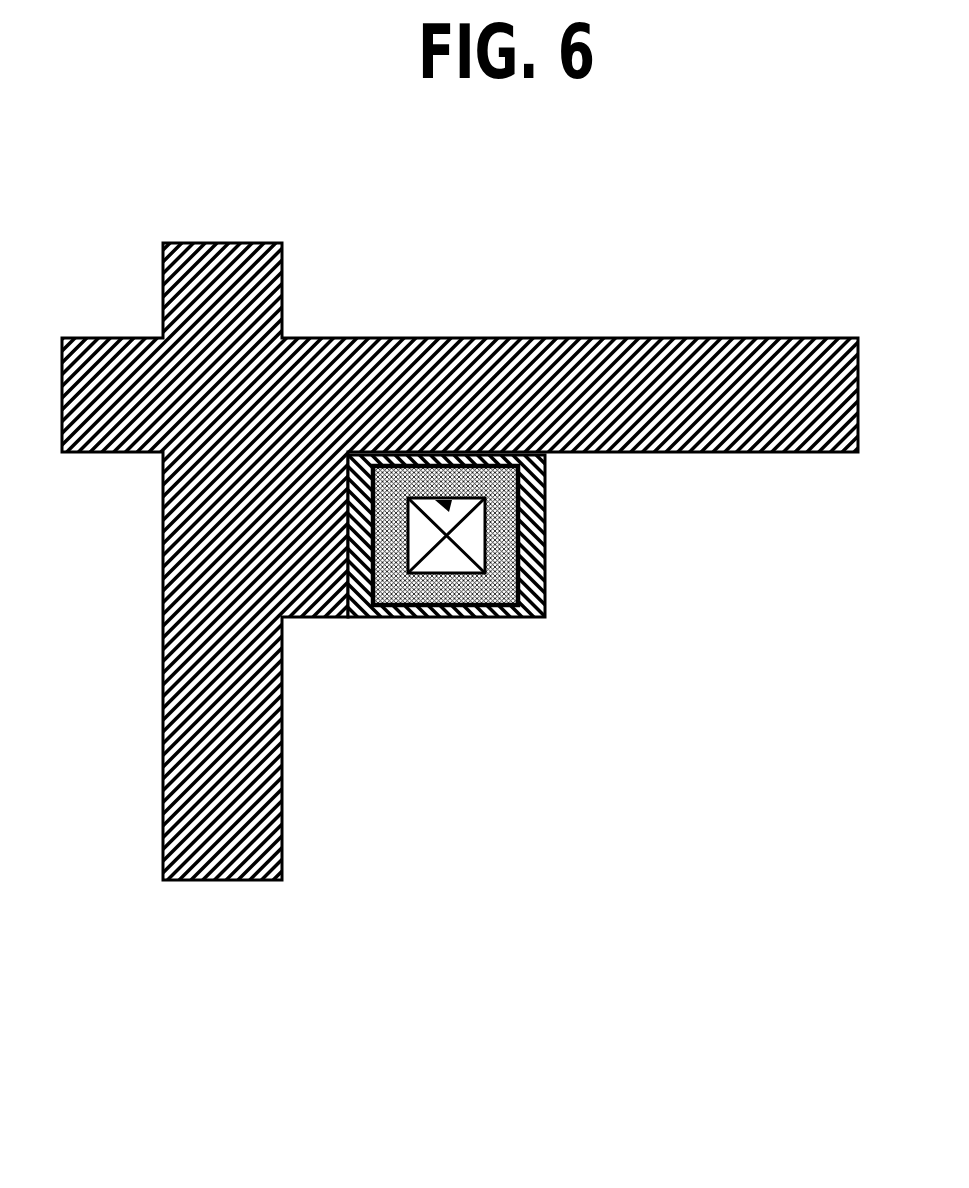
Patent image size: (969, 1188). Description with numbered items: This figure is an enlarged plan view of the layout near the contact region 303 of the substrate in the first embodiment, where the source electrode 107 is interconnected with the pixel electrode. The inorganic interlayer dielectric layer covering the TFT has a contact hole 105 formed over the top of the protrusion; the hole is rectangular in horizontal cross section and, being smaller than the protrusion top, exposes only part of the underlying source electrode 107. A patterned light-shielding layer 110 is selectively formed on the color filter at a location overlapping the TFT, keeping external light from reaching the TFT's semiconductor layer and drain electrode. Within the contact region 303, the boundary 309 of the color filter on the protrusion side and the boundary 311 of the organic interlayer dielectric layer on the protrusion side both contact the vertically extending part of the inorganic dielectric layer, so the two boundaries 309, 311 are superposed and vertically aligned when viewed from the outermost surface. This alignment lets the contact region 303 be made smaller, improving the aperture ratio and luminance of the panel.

The contact hole 105 is at (395, 450).
The light-shielding layer 110 is at (230, 843).
The contact region 303 is at (461, 494).
The source electrode 107 is at (367, 620).
The boundary of the organic interlayer dielectric layer 311 is at (545, 585).
The boundary of the color filter 309 is at (452, 618).